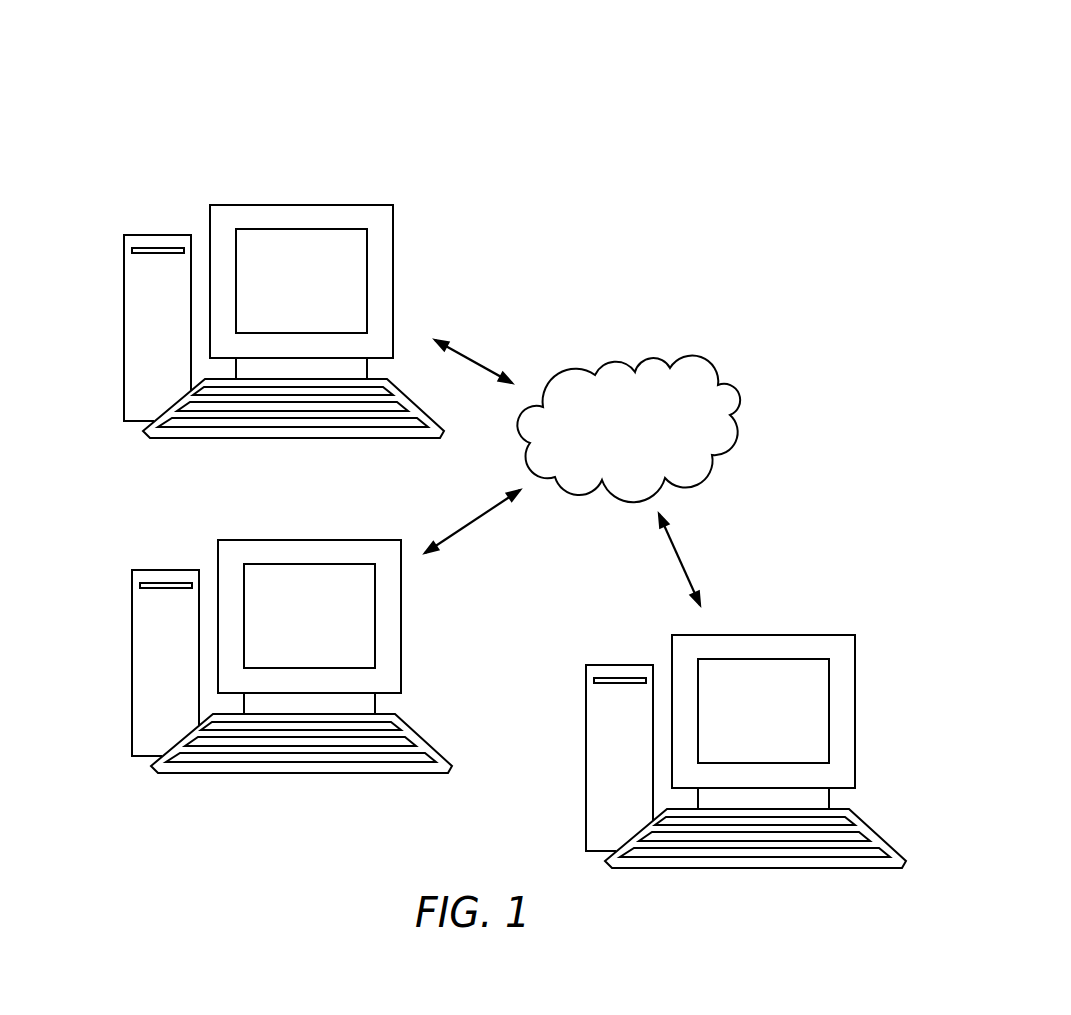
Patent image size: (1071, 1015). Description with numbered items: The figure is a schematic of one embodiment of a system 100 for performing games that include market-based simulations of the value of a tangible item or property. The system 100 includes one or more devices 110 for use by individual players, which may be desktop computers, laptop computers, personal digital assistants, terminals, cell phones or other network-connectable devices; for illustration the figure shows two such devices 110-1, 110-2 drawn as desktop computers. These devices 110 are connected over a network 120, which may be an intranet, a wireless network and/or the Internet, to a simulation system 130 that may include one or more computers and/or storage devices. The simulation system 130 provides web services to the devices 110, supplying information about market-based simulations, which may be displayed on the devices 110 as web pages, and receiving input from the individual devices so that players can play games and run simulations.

The system 100 is at (367, 53).
The devices 110 is at (218, 120).
The device 110-1 is at (165, 532).
The device 110-2 is at (168, 178).
The network 120 is at (642, 436).
The simulation system 130 is at (633, 634).